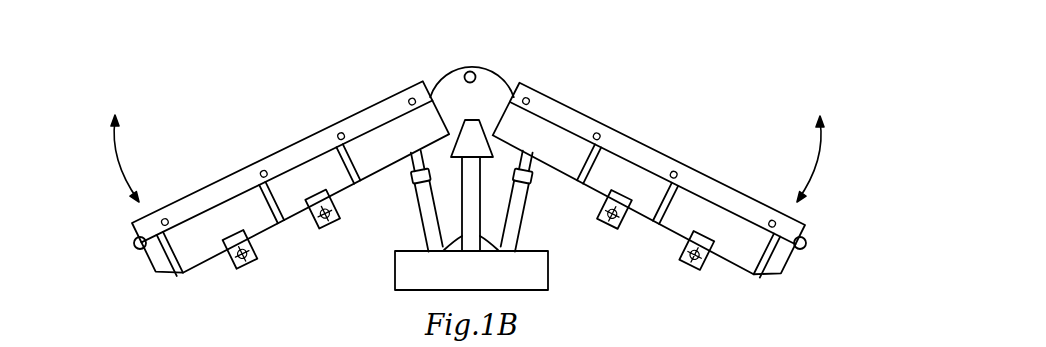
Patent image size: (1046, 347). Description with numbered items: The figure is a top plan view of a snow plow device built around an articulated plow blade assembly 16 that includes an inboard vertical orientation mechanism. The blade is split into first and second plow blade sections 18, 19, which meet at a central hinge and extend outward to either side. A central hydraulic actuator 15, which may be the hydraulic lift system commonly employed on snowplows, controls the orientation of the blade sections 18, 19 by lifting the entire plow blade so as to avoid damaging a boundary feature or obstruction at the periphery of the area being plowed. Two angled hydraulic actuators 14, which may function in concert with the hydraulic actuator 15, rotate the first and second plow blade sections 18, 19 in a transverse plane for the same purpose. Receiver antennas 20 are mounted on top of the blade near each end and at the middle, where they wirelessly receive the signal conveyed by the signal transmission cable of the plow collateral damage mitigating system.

The hydraulic actuators 14 is at (425, 219).
The hydraulic actuator 15 is at (470, 223).
The articulated plow blade assembly 16 is at (470, 175).
The first plow blade section 18 is at (305, 177).
The second plow blade section 19 is at (635, 178).
The receiver antennas 20 is at (471, 71).